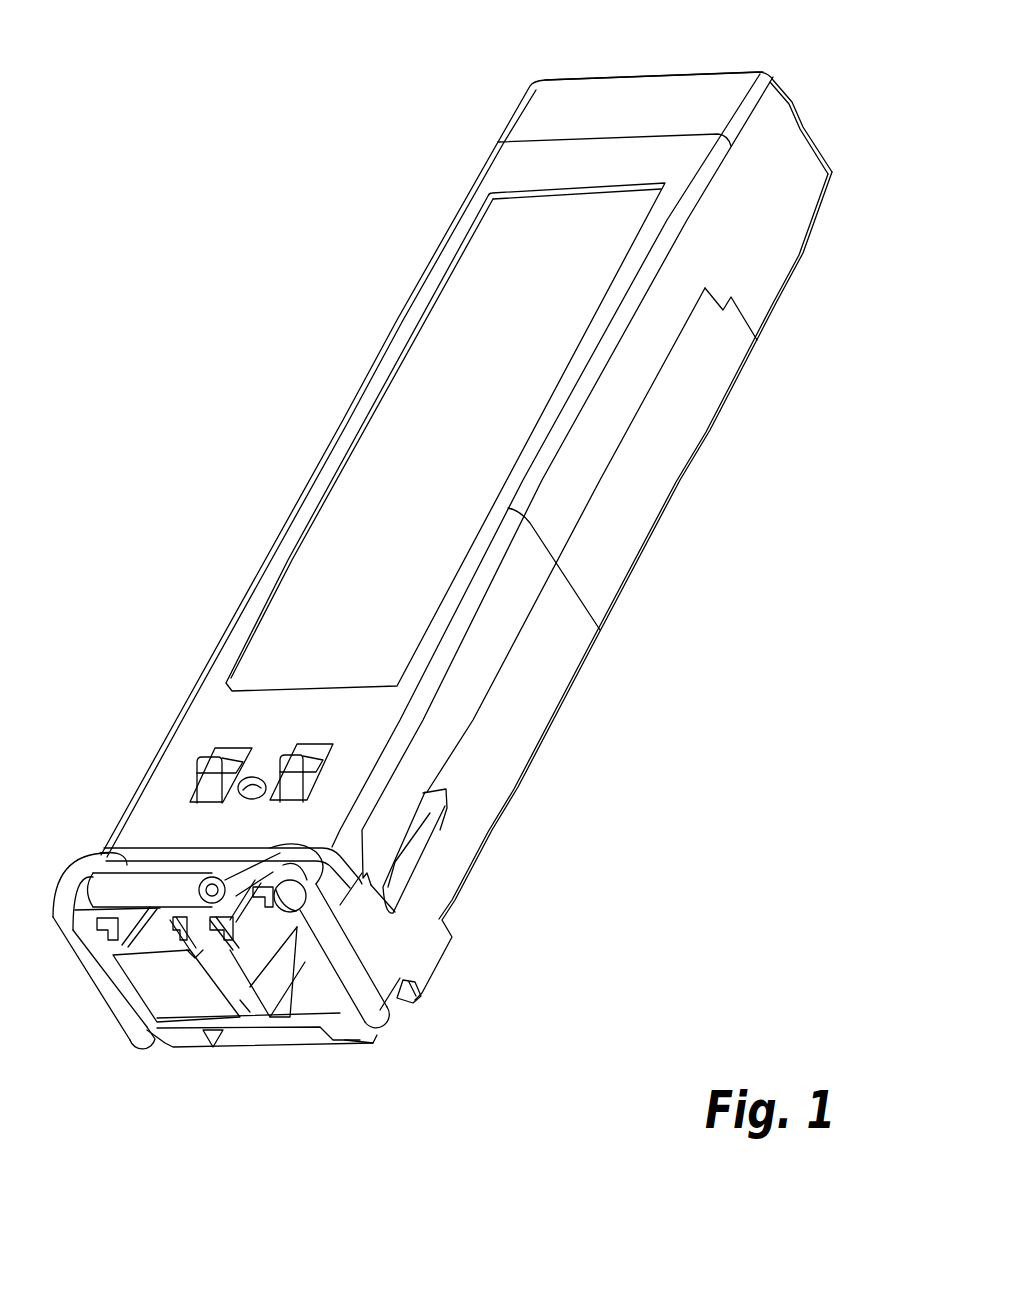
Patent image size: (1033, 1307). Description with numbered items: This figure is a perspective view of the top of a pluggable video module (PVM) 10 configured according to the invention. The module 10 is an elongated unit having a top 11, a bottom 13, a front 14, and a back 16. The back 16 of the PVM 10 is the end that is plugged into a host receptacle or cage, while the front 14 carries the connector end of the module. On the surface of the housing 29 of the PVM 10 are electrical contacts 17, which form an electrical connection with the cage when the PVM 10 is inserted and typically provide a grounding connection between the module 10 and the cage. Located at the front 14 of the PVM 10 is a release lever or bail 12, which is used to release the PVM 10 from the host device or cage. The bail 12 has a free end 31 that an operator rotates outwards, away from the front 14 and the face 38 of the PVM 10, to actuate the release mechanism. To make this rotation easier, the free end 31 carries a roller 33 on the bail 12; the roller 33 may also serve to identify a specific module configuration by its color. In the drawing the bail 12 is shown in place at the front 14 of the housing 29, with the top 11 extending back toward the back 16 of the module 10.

The pluggable video module 10 is at (165, 123).
The top 11 is at (375, 490).
The bail 12 is at (363, 1048).
The bottom 13 is at (627, 598).
The front 14 is at (197, 1058).
The back 16 is at (650, 68).
The electrical contacts 17 is at (212, 757).
The housing 29 is at (388, 310).
The free end 31 is at (97, 860).
The roller 33 is at (142, 893).
The face 38 is at (245, 1003).